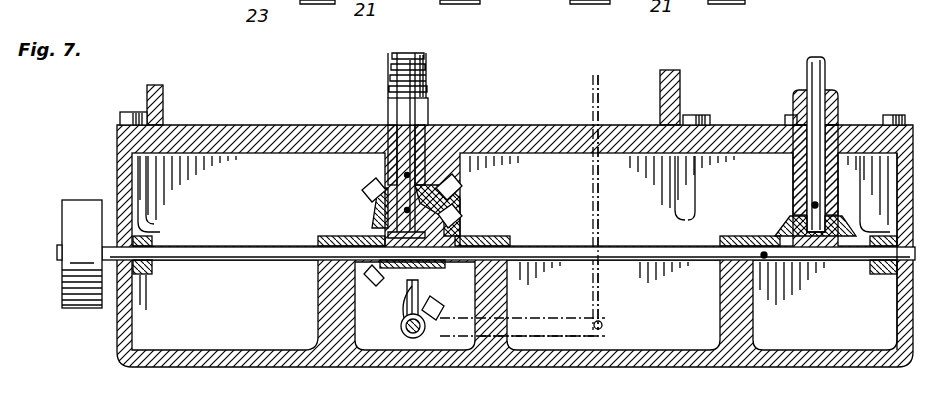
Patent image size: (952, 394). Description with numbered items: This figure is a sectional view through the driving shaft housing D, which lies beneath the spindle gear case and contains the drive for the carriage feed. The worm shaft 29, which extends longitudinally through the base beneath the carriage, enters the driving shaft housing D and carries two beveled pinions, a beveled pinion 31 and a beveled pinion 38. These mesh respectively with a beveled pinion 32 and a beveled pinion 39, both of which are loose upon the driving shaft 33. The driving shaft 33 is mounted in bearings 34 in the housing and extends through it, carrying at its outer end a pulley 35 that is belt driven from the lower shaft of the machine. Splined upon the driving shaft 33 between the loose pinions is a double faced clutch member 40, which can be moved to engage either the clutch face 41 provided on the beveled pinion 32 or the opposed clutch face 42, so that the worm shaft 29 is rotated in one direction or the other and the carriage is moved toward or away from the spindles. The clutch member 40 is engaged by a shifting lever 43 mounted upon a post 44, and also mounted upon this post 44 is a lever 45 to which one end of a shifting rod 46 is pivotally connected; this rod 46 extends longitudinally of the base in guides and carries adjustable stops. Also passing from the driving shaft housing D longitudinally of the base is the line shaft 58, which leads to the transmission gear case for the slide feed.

The worm shaft 29 is at (432, 104).
The beveled pinion 31 is at (395, 181).
The beveled pinion 32 is at (462, 210).
The driving shaft 33 is at (543, 248).
The bearings 34 is at (152, 244).
The pulley 35 is at (88, 208).
The beveled pinion 38 is at (390, 215).
The beveled pinion 39 is at (390, 280).
The double faced clutch member 40 is at (433, 296).
The clutch face 41 is at (458, 232).
The clutch face 42 is at (372, 274).
The shifting lever 43 is at (404, 318).
The post 44 is at (414, 340).
The lever 45 is at (542, 332).
The shifting rod 46 is at (602, 322).
The line shaft 58 is at (828, 76).
The driving shaft housing D is at (912, 312).